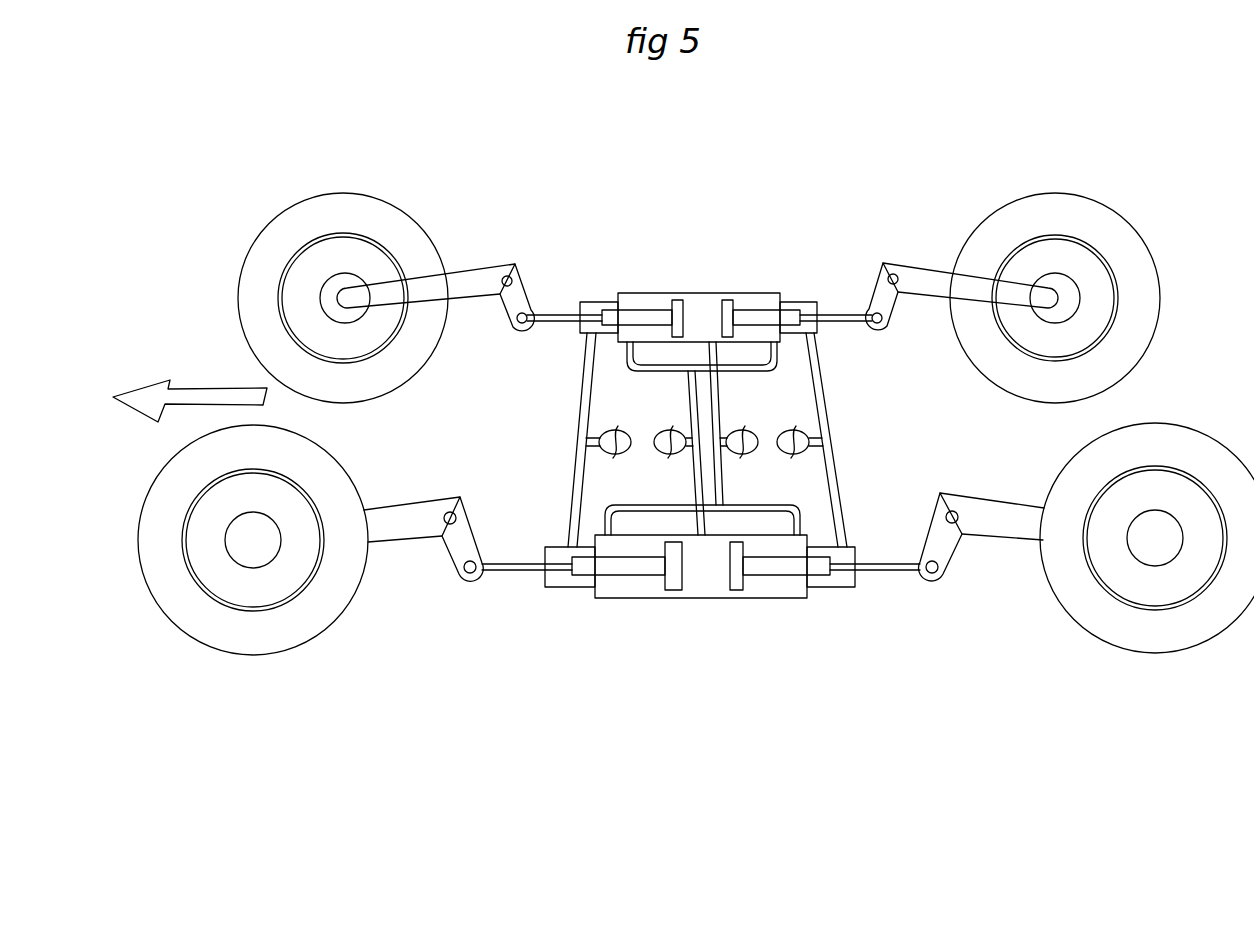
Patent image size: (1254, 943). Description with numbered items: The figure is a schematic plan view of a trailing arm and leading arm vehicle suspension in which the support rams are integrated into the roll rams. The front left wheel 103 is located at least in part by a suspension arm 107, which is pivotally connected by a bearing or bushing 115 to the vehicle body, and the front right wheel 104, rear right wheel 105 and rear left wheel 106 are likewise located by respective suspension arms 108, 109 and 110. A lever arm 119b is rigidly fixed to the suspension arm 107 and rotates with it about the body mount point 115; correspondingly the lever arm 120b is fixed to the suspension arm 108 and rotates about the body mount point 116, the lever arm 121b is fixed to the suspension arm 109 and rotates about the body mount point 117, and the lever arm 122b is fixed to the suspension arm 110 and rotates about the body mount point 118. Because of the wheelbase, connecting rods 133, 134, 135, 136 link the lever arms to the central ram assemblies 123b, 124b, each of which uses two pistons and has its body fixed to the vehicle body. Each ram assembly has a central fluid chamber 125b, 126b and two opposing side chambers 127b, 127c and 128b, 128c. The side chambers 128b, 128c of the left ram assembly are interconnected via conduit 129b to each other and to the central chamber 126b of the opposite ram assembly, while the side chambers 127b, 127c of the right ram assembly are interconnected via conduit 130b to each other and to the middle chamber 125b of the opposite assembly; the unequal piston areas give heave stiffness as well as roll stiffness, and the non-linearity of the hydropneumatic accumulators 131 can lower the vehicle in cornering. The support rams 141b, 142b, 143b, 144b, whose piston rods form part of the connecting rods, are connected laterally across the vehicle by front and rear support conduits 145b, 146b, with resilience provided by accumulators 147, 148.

The front left wheel 103 is at (232, 637).
The front right wheel 104 is at (310, 217).
The rear right wheel 105 is at (1110, 220).
The rear left wheel 106 is at (1158, 627).
The suspension arm 107 is at (403, 525).
The suspension arm 108 is at (482, 267).
The suspension arm 109 is at (937, 280).
The suspension arm 110 is at (1025, 517).
The bearing or bushing 115 is at (450, 526).
The body mount point 116 is at (512, 278).
The body mount point 117 is at (893, 275).
The body mount point 118 is at (955, 512).
The lever arm 119b is at (467, 536).
The lever arm 120b is at (517, 295).
The lever arm 121b is at (883, 290).
The lever arm 122b is at (938, 543).
The ram assembly 123b is at (710, 598).
The ram assembly 124b is at (718, 276).
The central fluid chamber 125b is at (705, 570).
The central fluid chamber 126b is at (694, 300).
The side chamber 127b is at (655, 300).
The side chamber 127c is at (765, 300).
The side chamber 128b is at (632, 598).
The side chamber 128c is at (772, 598).
The conduit 129b is at (691, 410).
The conduit 130b is at (715, 407).
The hydropneumatic accumulator 131 is at (668, 450).
The connecting rod 133 is at (515, 572).
The connecting rod 134 is at (563, 322).
The connecting rod 135 is at (847, 322).
The connecting rod 136 is at (900, 572).
The support ram 141b is at (565, 599).
The support ram 142b is at (602, 298).
The support ram 143b is at (810, 299).
The support ram 144b is at (845, 599).
The front support conduit 145b is at (582, 408).
The rear support conduit 146b is at (820, 378).
The accumulator 147 is at (622, 428).
The accumulator 148 is at (795, 430).